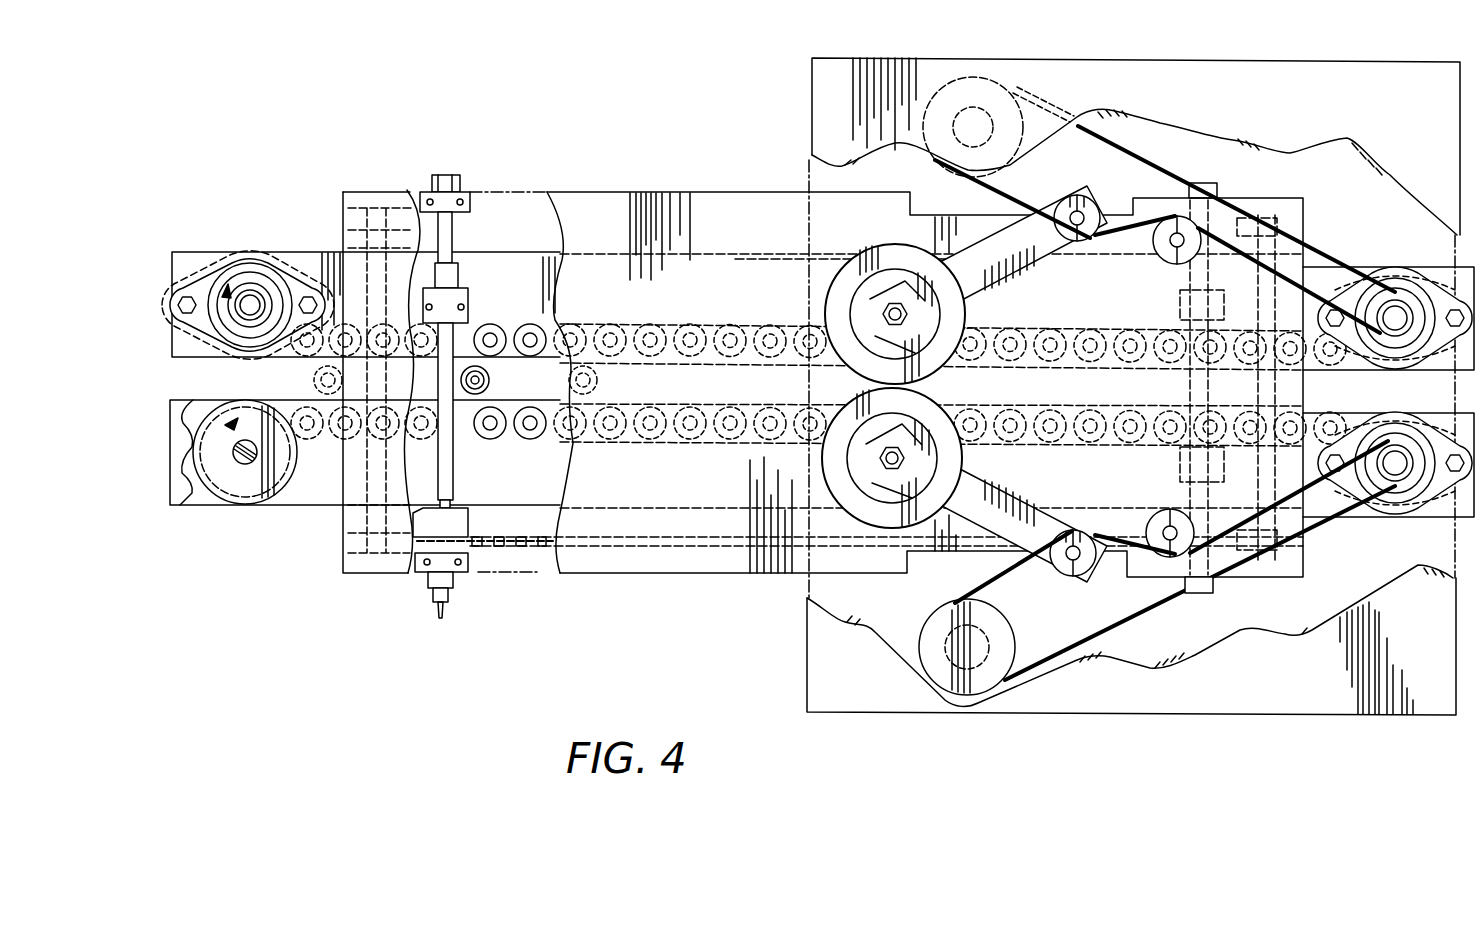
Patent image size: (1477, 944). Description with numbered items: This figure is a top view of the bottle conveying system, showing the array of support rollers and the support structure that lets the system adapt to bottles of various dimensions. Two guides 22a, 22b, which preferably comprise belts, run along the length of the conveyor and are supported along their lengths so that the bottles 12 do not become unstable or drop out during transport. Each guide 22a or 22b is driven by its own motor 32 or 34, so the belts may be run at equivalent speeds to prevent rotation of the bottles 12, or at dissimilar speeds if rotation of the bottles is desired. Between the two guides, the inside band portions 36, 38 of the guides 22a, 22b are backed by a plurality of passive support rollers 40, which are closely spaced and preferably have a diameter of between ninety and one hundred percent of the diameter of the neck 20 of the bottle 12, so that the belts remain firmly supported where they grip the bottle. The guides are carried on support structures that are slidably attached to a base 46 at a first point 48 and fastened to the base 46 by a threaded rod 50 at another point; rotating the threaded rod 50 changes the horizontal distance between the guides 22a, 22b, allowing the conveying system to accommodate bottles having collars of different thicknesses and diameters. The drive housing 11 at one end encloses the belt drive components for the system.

The belt drive housing 11 is at (778, 158).
The bottle 12 is at (497, 326).
The neck 20 is at (326, 436).
The guide 22a is at (193, 262).
The guide 22b is at (195, 508).
The motor 32 is at (255, 462).
The motor 34 is at (252, 302).
The inside band portion 36 is at (668, 440).
The inside band portion 38 is at (762, 368).
The passive support roller 40 is at (490, 440).
The base 46 is at (537, 574).
The first point 48 is at (1210, 598).
The threaded rod 50 is at (440, 622).